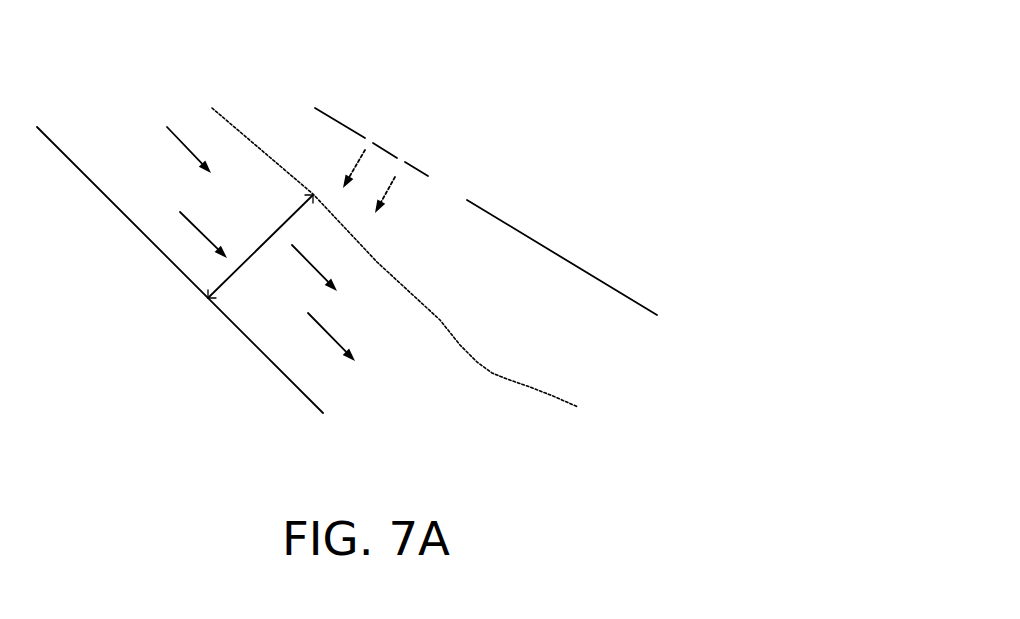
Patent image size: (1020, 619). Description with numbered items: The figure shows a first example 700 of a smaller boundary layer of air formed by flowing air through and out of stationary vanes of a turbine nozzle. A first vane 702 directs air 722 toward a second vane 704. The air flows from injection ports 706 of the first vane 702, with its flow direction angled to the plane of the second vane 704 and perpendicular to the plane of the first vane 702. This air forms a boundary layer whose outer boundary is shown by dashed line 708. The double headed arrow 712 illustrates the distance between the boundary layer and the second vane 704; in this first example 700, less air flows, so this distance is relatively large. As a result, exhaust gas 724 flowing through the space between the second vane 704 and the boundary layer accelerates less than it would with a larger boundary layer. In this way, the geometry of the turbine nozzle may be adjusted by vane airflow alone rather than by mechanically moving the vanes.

The first example 700 is at (582, 32).
The first vane 702 is at (618, 287).
The second vane 704 is at (55, 142).
The injection ports 706 is at (400, 133).
The dashed line 708 is at (237, 125).
The double headed arrow 712 is at (272, 237).
The air 722 is at (390, 190).
The exhaust gas 724 is at (337, 338).